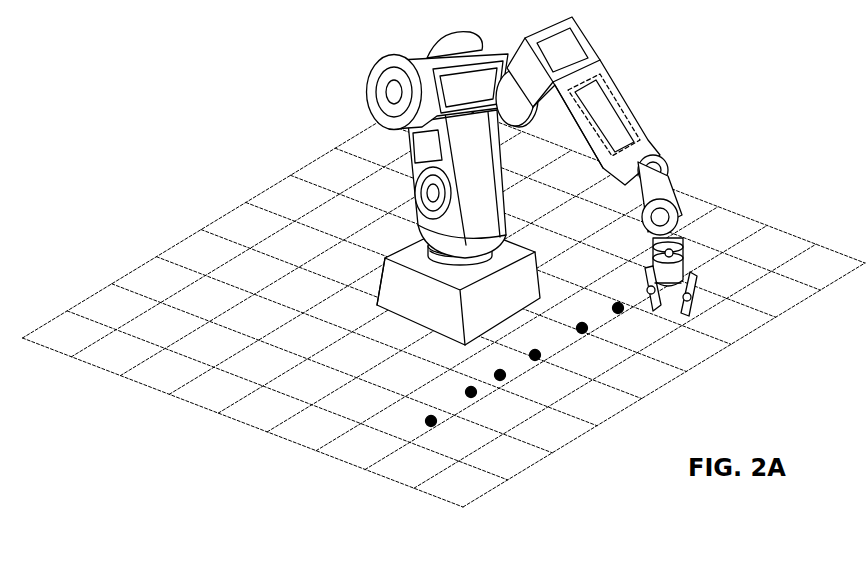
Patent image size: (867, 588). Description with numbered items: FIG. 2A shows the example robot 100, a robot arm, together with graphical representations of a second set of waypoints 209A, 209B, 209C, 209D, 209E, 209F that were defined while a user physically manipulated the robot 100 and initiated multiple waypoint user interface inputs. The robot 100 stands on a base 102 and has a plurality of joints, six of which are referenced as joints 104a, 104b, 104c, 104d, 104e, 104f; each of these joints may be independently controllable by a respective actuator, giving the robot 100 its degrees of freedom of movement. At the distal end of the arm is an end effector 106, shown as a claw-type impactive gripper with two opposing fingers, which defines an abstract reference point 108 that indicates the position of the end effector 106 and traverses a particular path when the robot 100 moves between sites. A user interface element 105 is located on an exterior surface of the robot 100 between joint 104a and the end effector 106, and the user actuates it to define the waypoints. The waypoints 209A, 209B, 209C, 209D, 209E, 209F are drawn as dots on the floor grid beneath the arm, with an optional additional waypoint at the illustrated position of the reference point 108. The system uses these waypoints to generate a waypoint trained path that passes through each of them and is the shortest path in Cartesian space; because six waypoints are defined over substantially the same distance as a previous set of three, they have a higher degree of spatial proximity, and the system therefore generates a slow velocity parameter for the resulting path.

The robot 100 is at (340, 67).
The base 102 is at (422, 308).
The joint 104a is at (674, 252).
The joint 104b is at (660, 217).
The joint 104c is at (657, 168).
The joint 104d is at (510, 97).
The joint 104e is at (437, 190).
The joint 104f is at (437, 263).
The user interface element 105 is at (680, 252).
The end effector 106 is at (690, 273).
The reference point 108 is at (665, 283).
The waypoint 209A is at (618, 308).
The waypoint 209B is at (582, 328).
The waypoint 209C is at (535, 355).
The waypoint 209D is at (500, 375).
The waypoint 209E is at (471, 392).
The waypoint 209F is at (431, 421).